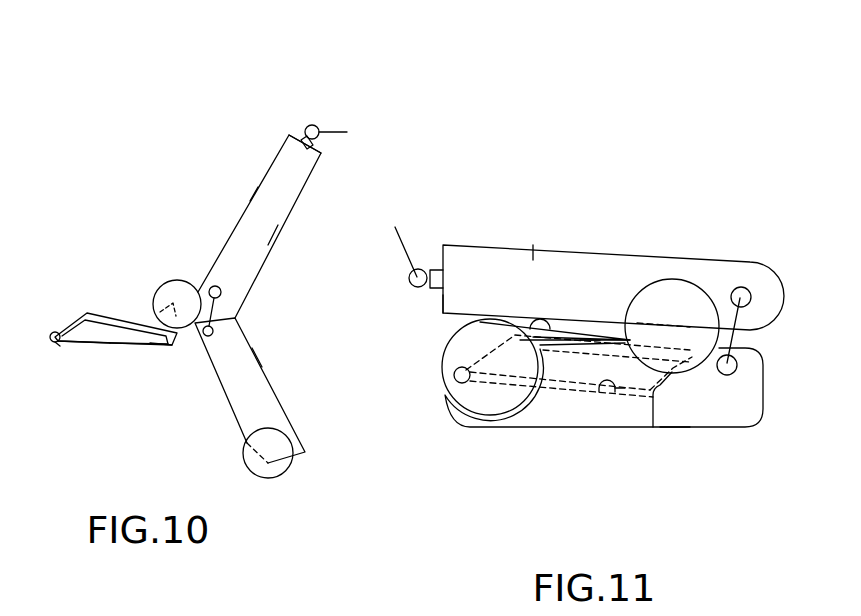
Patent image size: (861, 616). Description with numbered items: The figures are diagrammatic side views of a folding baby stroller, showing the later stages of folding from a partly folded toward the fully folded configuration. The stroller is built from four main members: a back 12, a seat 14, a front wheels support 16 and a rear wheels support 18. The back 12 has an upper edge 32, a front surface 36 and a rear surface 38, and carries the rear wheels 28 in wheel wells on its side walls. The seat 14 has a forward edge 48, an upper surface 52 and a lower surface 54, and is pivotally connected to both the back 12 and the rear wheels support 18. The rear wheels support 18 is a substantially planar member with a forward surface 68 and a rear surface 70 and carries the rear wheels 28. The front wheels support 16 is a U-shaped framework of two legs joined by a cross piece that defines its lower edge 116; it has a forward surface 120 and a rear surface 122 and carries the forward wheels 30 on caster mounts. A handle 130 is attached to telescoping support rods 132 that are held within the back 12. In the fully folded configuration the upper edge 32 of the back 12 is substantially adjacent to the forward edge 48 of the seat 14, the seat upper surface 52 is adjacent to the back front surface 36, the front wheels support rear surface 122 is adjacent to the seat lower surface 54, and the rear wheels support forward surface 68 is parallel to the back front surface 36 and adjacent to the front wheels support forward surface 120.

In FIG. 10, the back 12 is at (236, 222).
In FIG. 11, the back 12 is at (499, 262).
In FIG. 10, the seat 14 is at (133, 311).
In FIG. 11, the seat 14 is at (582, 360).
In FIG. 10, the front wheels support 16 is at (162, 355).
In FIG. 11, the front wheels support 16 is at (610, 410).
In FIG. 10, the rear wheels support 18 is at (274, 380).
In FIG. 11, the rear wheels support 18 is at (766, 402).
In FIG. 10, the rear wheels 28 is at (250, 472).
In FIG. 11, the rear wheels 28 is at (444, 357).
In FIG. 10, the forward wheels 30 is at (175, 279).
In FIG. 11, the forward wheels 30 is at (671, 297).
In FIG. 10, the upper edge 32 is at (292, 128).
In FIG. 11, the upper edge 32 is at (443, 308).
In FIG. 10, the front surface 36 is at (257, 188).
In FIG. 11, the front surface 36 is at (557, 336).
In FIG. 10, the rear surface 38 is at (273, 233).
In FIG. 11, the rear surface 38 is at (533, 245).
In FIG. 10, the forward edge 48 is at (58, 333).
In FIG. 11, the forward edge 48 is at (455, 378).
In FIG. 10, the upper surface 52 is at (107, 313).
In FIG. 11, the upper surface 52 is at (558, 345).
In FIG. 10, the lower surface 54 is at (70, 342).
In FIG. 11, the lower surface 54 is at (587, 355).
In FIG. 10, the forward surface 68 is at (210, 340).
In FIG. 11, the forward surface 68 is at (592, 338).
In FIG. 10, the rear surface 70 is at (253, 348).
In FIG. 11, the rear surface 70 is at (672, 428).
In FIG. 11, the lower edge 116 is at (648, 430).
In FIG. 10, the forward surface 120 is at (62, 345).
In FIG. 11, the forward surface 120 is at (628, 395).
In FIG. 10, the rear surface 122 is at (132, 343).
In FIG. 11, the rear surface 122 is at (622, 402).
In FIG. 10, the handle 130 is at (340, 128).
In FIG. 11, the handle 130 is at (402, 247).
In FIG. 10, the telescoping support rods 132 is at (315, 141).
In FIG. 11, the telescoping support rods 132 is at (440, 273).